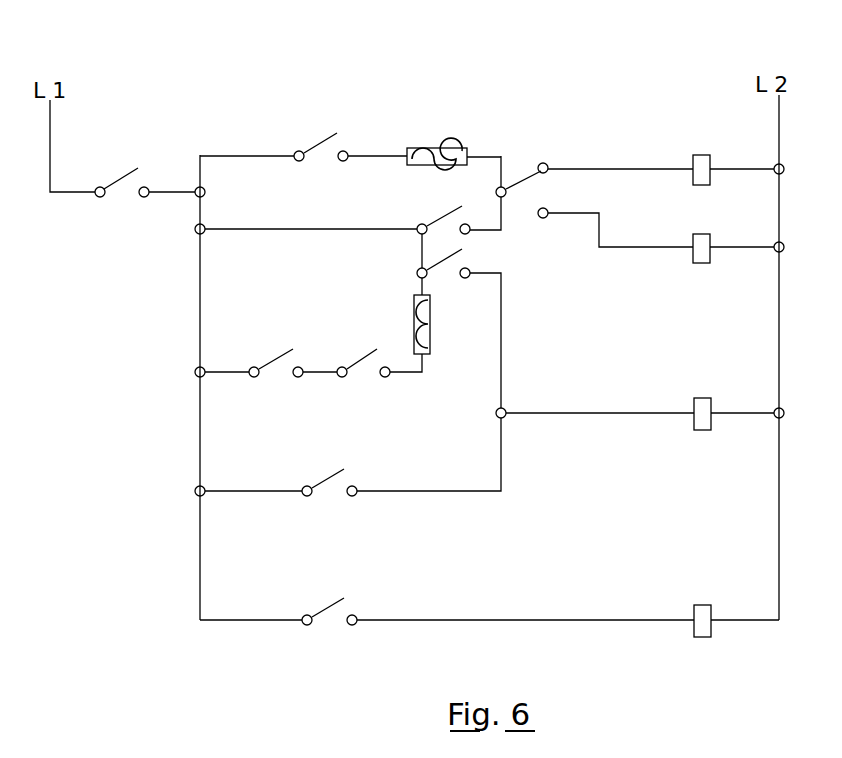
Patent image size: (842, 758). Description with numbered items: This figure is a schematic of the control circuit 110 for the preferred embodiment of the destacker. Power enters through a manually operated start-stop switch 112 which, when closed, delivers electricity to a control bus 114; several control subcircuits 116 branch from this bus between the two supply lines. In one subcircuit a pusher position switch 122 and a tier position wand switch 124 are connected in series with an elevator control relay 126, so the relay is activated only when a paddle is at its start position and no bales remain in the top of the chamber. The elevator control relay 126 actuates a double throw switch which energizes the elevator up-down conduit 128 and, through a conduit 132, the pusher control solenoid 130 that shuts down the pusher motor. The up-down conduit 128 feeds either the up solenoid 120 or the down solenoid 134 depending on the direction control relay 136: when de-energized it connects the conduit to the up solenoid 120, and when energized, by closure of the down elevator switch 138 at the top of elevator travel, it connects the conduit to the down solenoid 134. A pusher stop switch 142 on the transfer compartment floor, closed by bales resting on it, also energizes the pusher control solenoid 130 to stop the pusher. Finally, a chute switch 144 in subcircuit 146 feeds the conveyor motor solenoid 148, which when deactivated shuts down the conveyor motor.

The control circuit 110 is at (531, 80).
The start-stop switch 112 is at (118, 178).
The control bus 114 is at (199, 332).
The control subcircuits 116 is at (247, 155).
The up solenoid 120 is at (699, 154).
The pusher position switch 122 is at (273, 356).
The tier position wand switch 124 is at (356, 356).
The elevator control relay 126 is at (432, 320).
The elevator up-down conduit 128 is at (489, 233).
The pusher control solenoid 130 is at (699, 397).
The conduit 132 is at (580, 411).
The down solenoid 134 is at (701, 234).
The direction control relay 136 is at (438, 147).
The down elevator switch 138 is at (313, 147).
The pusher stop switch 142 is at (315, 485).
The chute switch 144 is at (327, 602).
The subcircuit 146 is at (500, 619).
The conveyor motor solenoid 148 is at (699, 605).